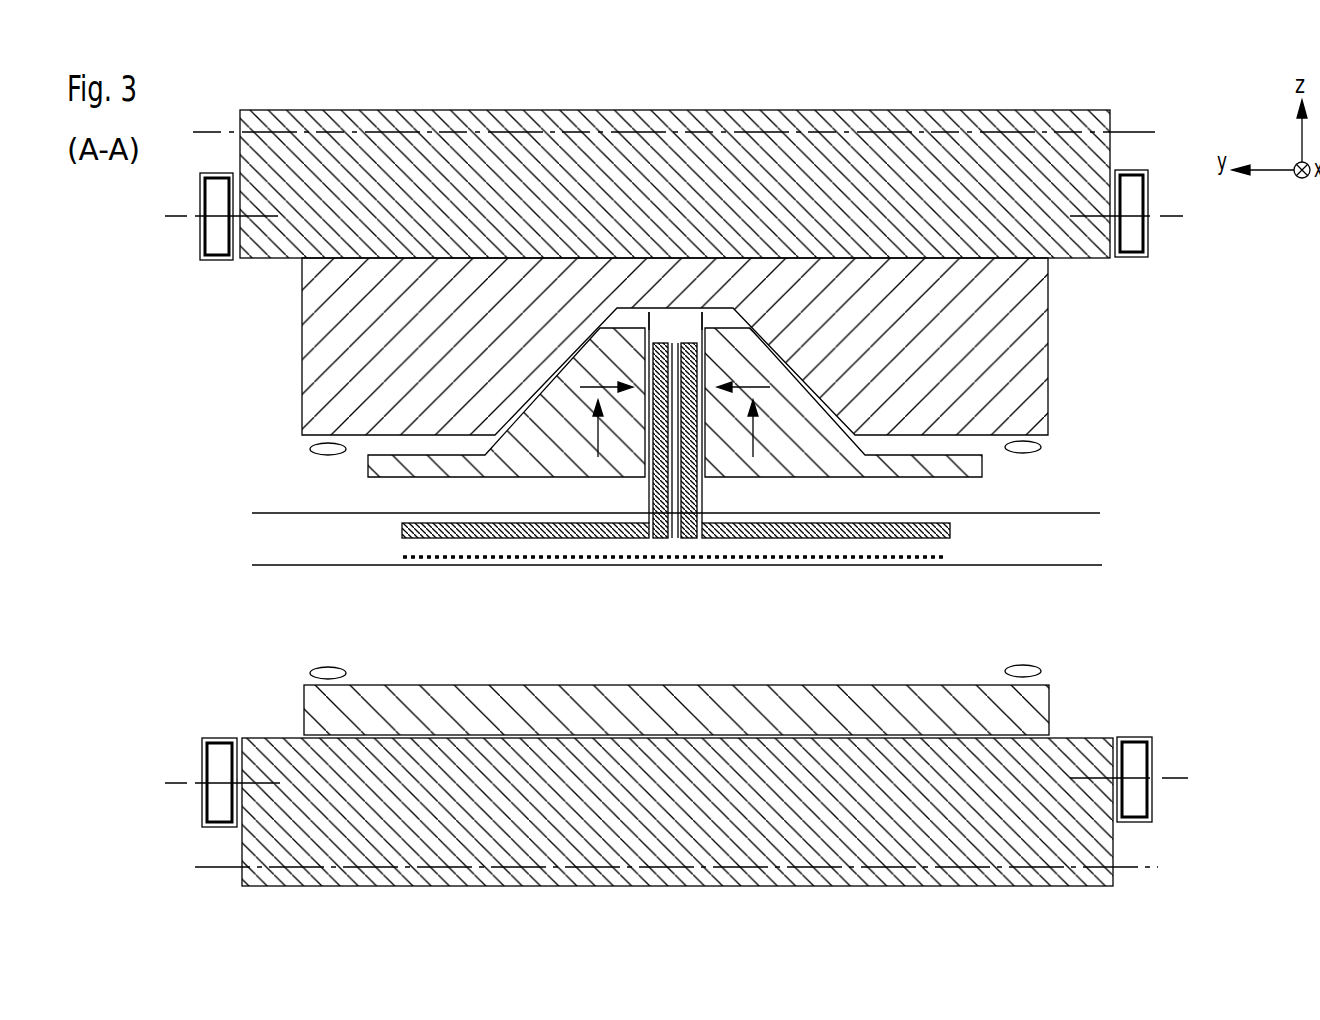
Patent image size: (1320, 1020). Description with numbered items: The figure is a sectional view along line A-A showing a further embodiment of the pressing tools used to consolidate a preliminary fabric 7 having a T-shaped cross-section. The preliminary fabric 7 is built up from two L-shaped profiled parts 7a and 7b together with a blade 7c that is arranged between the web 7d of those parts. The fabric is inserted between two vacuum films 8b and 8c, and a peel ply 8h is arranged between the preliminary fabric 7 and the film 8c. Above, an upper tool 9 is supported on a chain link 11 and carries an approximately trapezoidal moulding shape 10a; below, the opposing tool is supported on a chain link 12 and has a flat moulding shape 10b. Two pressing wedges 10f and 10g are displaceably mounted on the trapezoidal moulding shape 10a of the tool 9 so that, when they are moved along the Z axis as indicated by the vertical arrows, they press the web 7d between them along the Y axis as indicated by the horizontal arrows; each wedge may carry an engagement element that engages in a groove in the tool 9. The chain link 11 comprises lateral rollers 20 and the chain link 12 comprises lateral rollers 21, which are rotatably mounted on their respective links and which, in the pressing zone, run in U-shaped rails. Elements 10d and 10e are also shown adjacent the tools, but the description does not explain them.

The preliminary fabric 7 is at (684, 540).
The L-shaped profiled part 7a is at (525, 540).
The L-shaped profiled part 7b is at (823, 540).
The blade 7c is at (673, 540).
The web 7d is at (703, 499).
The vacuum film 8b is at (1087, 512).
The vacuum film 8c is at (1072, 566).
The peel ply 8h is at (880, 557).
The tool 9 is at (1033, 348).
The moulding shape 10a is at (697, 339).
The moulding shape 10b is at (753, 683).
The gas opening 10d is at (1030, 447).
The gas opening 10e is at (1033, 672).
The pressing wedge 10f is at (970, 464).
The pressing wedge 10g is at (380, 467).
The chain link 11 is at (263, 155).
The chain link 12 is at (268, 848).
The lateral rollers 20 is at (1145, 238).
The lateral rollers 21 is at (1145, 758).